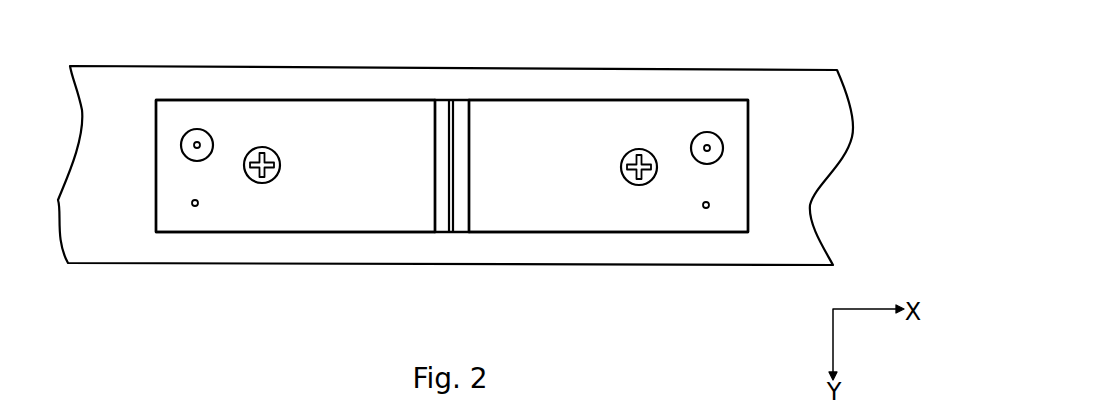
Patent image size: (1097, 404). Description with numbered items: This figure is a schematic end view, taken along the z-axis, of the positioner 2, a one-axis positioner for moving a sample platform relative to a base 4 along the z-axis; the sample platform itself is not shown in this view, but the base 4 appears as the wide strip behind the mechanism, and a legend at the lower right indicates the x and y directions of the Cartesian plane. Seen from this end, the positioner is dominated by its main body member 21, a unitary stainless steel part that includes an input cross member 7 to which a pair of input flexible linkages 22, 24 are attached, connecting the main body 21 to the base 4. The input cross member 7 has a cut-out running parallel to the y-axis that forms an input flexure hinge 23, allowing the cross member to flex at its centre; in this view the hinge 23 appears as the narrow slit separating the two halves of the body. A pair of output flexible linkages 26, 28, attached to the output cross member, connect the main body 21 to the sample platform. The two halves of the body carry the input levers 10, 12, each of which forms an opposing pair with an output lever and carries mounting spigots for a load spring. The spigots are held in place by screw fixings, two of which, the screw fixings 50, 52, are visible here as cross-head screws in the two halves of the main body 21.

The positioner 2 is at (574, 52).
The base 4 is at (762, 80).
The input cross member 7 is at (498, 220).
The input lever 10 is at (390, 144).
The input lever 12 is at (565, 154).
The main body member 21 is at (268, 100).
The input flexible linkage 22 is at (196, 206).
The input flexure hinge 23 is at (458, 233).
The input flexible linkage 24 is at (706, 209).
The output flexible linkage 26 is at (192, 131).
The output flexible linkage 28 is at (700, 135).
The screw fixing 50 is at (280, 172).
The screw fixing 52 is at (621, 171).